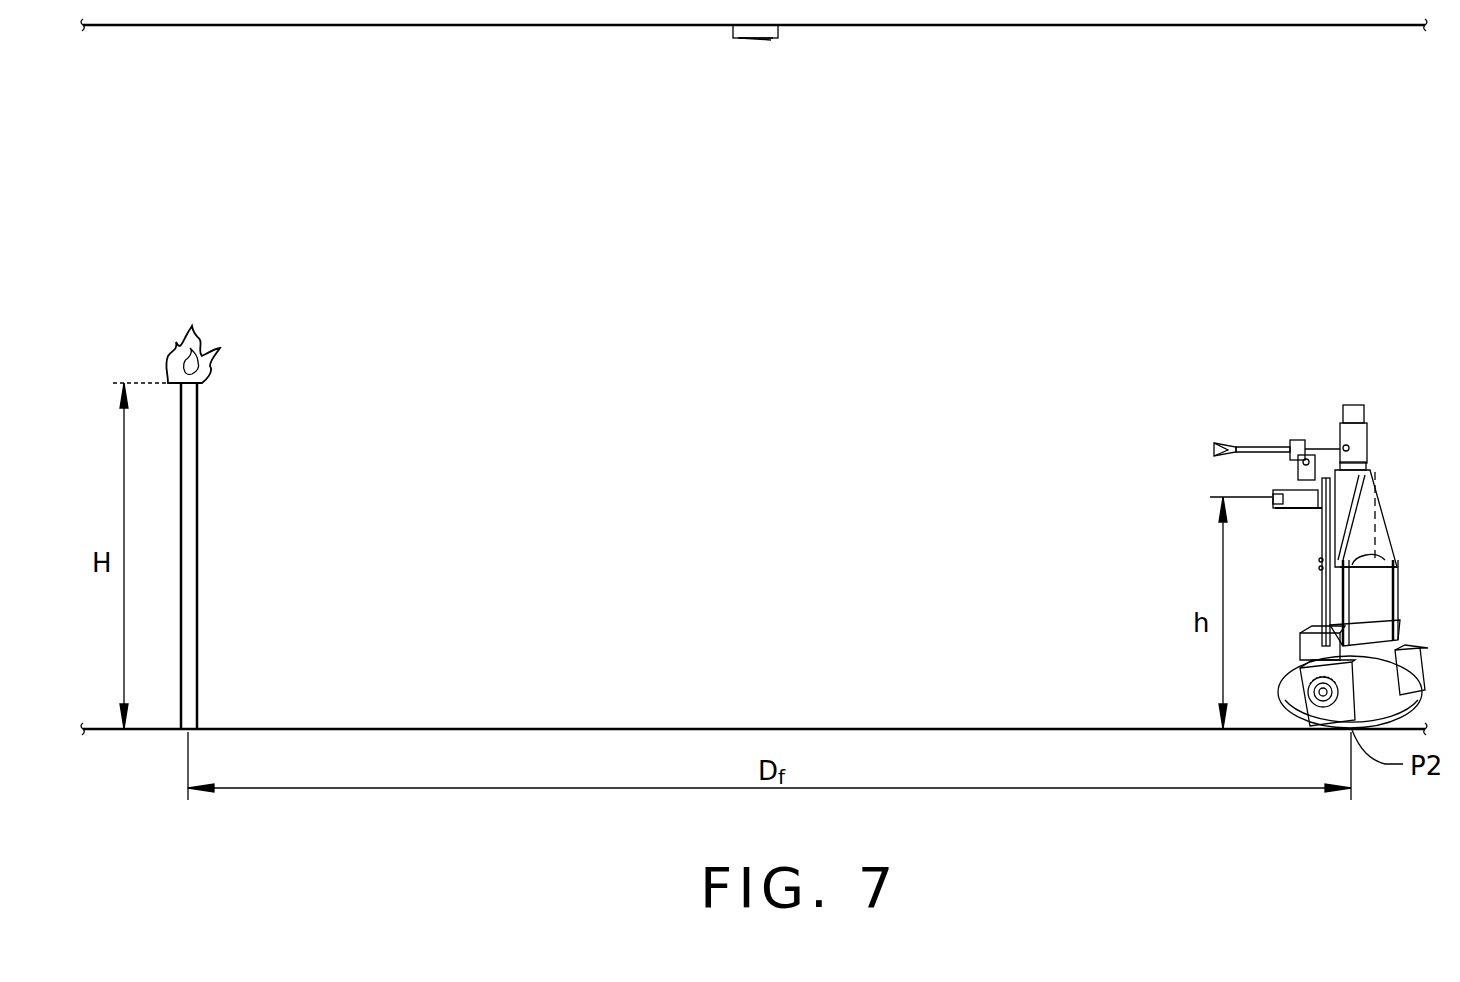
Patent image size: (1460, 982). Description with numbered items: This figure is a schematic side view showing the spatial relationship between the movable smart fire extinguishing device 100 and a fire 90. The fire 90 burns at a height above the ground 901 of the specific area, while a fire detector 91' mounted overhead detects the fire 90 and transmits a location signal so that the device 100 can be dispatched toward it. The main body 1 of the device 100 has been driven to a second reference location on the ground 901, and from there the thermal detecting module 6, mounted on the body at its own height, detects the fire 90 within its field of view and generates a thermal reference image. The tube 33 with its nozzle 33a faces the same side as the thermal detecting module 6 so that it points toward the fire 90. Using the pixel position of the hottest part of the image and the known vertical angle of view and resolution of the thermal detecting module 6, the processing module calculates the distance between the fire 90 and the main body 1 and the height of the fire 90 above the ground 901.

The fire detector 91' is at (802, 68).
The ground 901 is at (383, 729).
The fire 90 is at (212, 366).
The movable smart fire extinguishing device 100 is at (1296, 545).
The main body 1 is at (1296, 550).
The tube 33 is at (1236, 428).
The nozzle 33a is at (1222, 452).
The thermal detecting module 6 is at (1300, 508).